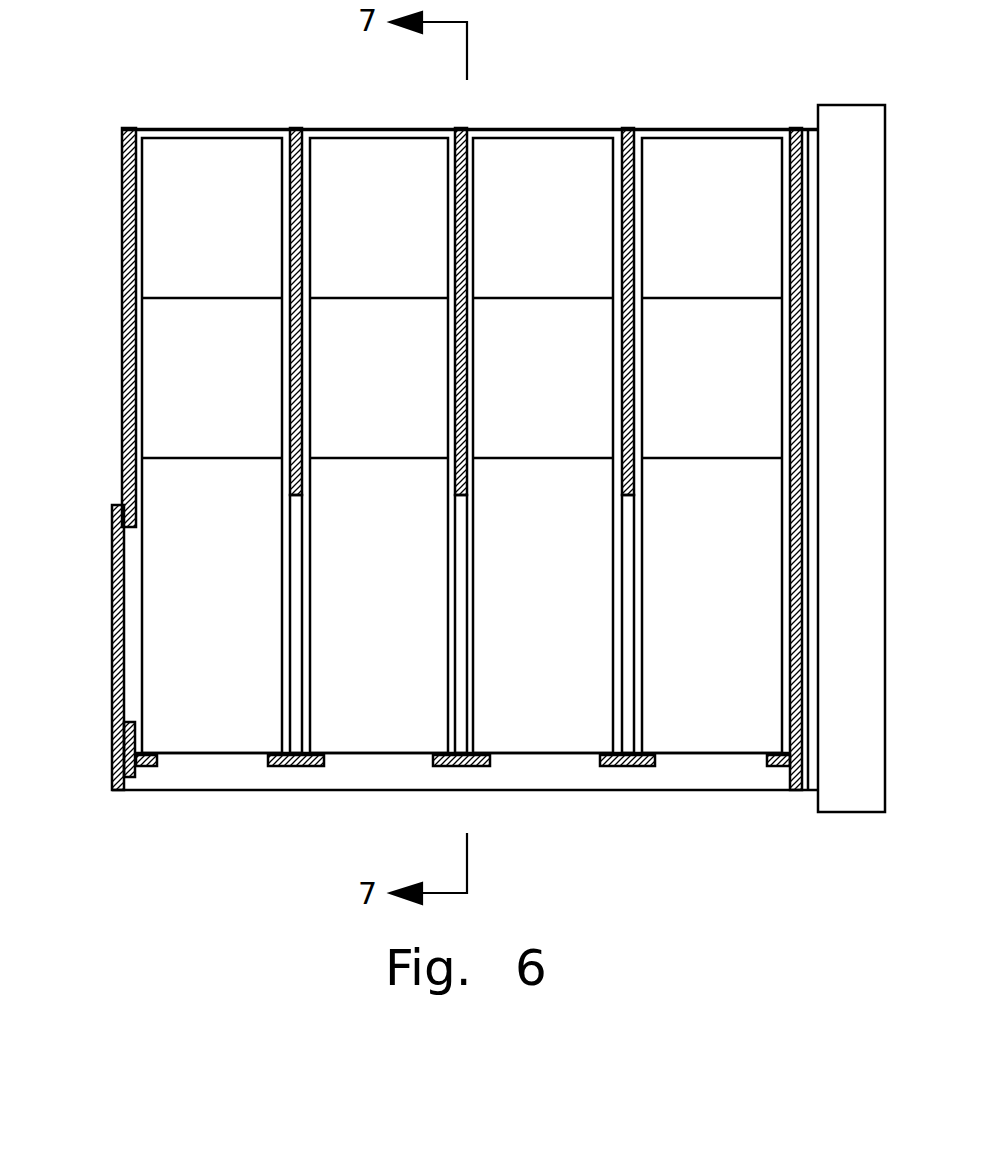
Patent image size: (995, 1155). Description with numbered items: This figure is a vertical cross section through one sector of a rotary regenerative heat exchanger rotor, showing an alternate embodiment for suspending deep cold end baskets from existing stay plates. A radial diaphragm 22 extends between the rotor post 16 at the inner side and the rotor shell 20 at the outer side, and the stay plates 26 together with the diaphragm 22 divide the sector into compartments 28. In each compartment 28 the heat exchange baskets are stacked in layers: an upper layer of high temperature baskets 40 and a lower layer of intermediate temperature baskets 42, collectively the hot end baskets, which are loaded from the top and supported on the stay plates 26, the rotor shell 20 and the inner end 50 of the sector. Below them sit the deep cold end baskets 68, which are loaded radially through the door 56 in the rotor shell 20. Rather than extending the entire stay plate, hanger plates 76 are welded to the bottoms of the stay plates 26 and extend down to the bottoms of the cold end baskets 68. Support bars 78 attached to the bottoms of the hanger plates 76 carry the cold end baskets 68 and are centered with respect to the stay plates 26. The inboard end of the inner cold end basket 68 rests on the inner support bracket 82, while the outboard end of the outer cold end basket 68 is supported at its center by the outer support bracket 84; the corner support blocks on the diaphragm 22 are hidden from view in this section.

The rotor post 16 is at (835, 797).
The rotor shell 20 is at (133, 128).
The radial diaphragm 22 is at (700, 130).
The stay plate 26 is at (297, 128).
The compartment 28 is at (388, 135).
The high temperature basket 40 is at (548, 150).
The intermediate temperature basket 42 is at (165, 378).
The inner end of the sector 50 is at (793, 128).
The door 56 is at (112, 606).
The deep cold end basket 68 is at (178, 678).
The hanger plate 76 is at (298, 530).
The support bar 78 is at (297, 766).
The inner support bracket 82 is at (775, 766).
The outer support bracket 84 is at (145, 766).